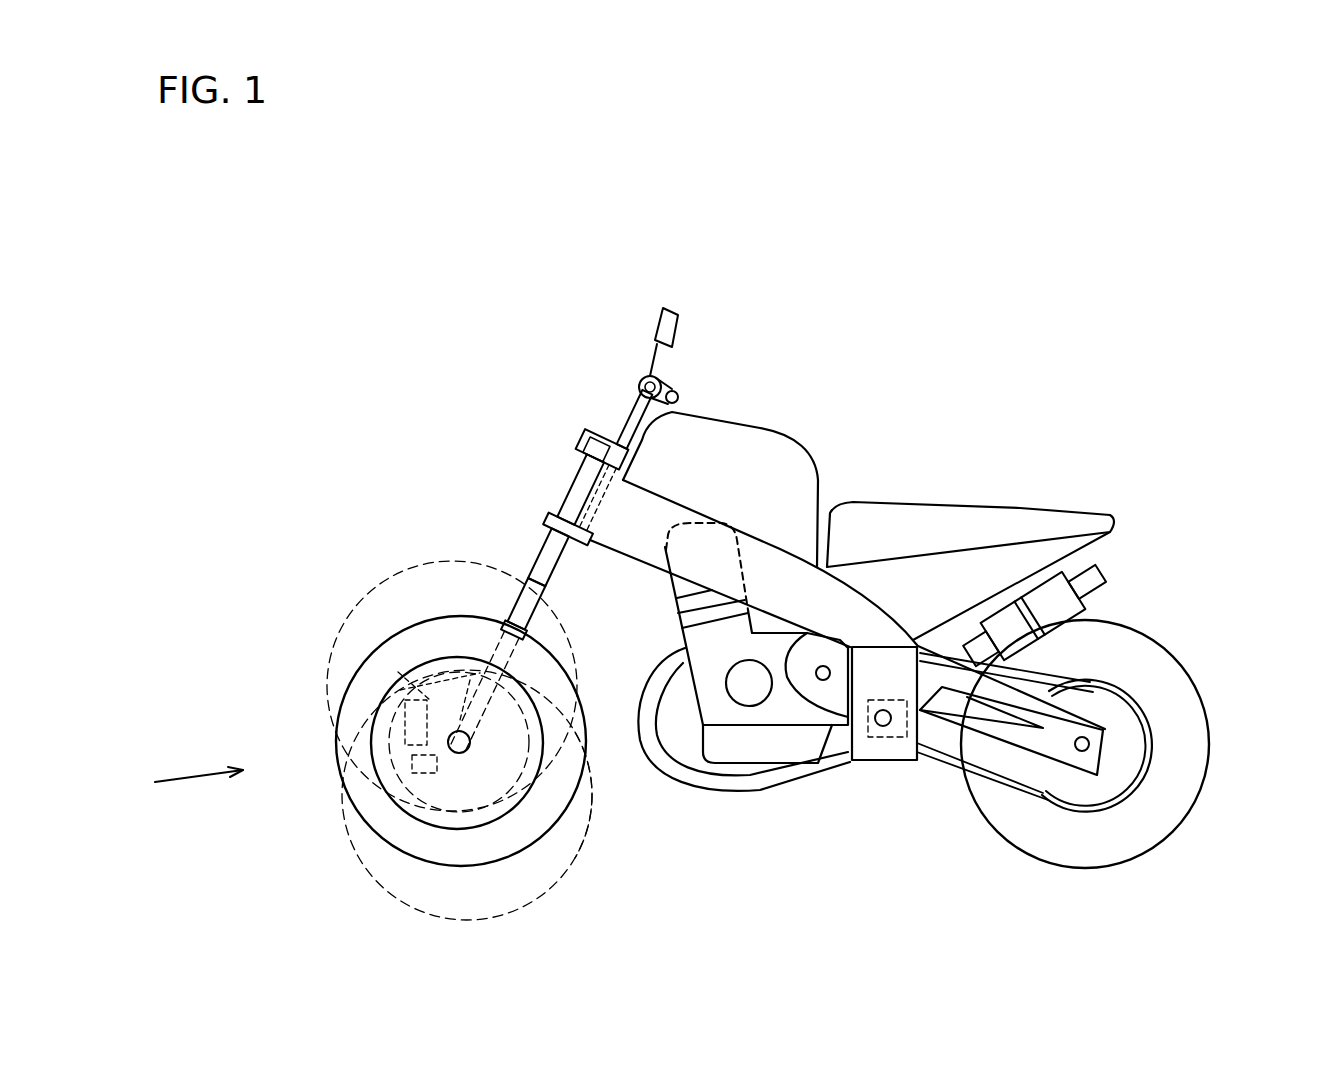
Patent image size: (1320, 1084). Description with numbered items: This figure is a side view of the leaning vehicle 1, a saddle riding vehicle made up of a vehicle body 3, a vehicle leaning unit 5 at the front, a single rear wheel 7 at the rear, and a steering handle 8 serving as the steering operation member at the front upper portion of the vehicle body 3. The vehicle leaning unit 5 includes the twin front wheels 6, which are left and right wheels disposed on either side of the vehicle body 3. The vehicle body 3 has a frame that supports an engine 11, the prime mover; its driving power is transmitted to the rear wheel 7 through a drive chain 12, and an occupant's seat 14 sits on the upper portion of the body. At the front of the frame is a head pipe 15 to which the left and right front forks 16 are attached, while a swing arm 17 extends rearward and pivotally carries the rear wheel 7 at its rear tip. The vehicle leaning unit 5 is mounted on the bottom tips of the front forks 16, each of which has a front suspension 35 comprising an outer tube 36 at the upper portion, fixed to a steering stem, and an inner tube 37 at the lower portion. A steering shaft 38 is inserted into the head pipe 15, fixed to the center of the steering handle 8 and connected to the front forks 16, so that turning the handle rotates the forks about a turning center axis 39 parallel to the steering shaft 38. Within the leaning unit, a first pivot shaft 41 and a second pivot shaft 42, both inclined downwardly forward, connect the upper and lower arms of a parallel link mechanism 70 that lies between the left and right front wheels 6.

The leaning vehicle 1 is at (418, 290).
The vehicle body 3 is at (797, 440).
The vehicle leaning unit 5 is at (313, 675).
The twin front wheels 6 is at (337, 760).
The rear wheel 7 is at (1177, 810).
The steering handle 8 is at (680, 403).
The engine 11 is at (748, 713).
The drive chain 12 is at (980, 777).
The occupant's seat 14 is at (962, 520).
The head pipe 15 is at (602, 449).
The front forks 16 is at (530, 575).
The swing arm 17 is at (1083, 727).
The front suspension 35 is at (524, 608).
The outer tube 36 is at (548, 557).
The inner tube 37 is at (598, 790).
The steering shaft 38 is at (615, 460).
The turning center axis 39 is at (485, 691).
The first pivot shaft 41 is at (372, 620).
The second pivot shaft 42 is at (467, 853).
The parallel link mechanism 70 is at (390, 745).